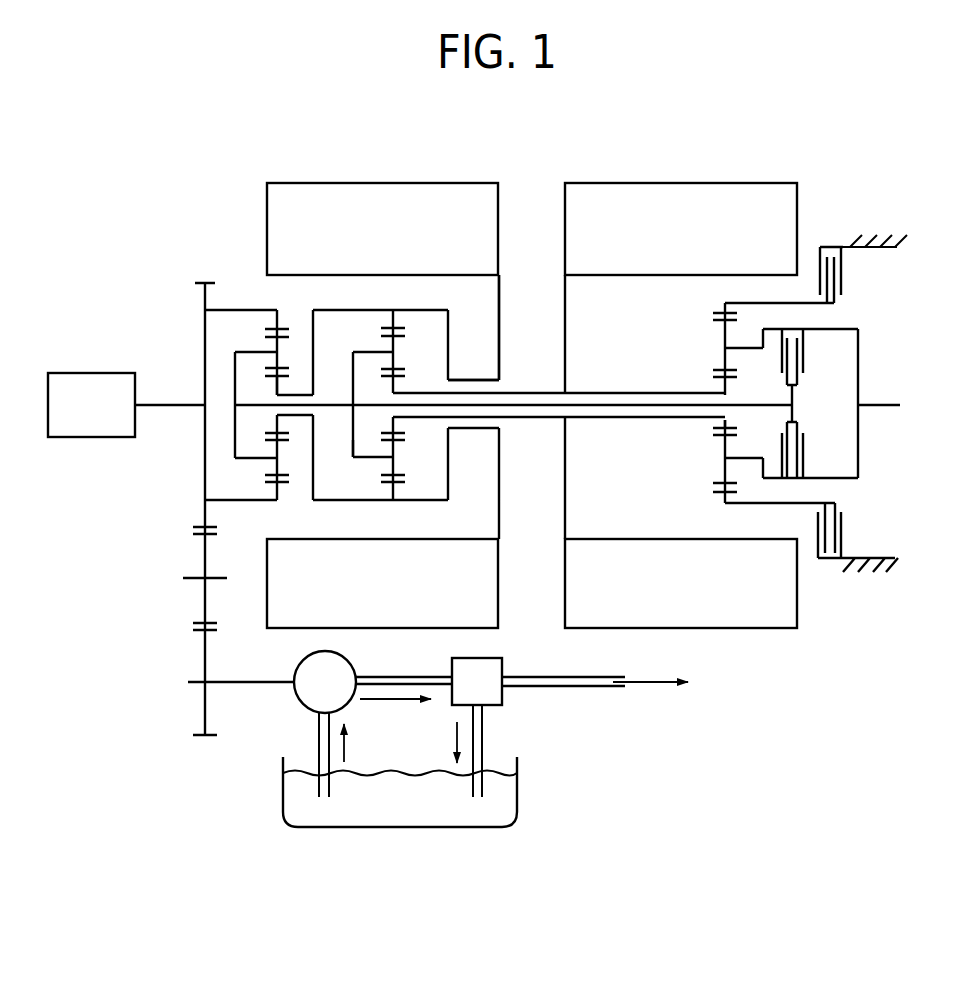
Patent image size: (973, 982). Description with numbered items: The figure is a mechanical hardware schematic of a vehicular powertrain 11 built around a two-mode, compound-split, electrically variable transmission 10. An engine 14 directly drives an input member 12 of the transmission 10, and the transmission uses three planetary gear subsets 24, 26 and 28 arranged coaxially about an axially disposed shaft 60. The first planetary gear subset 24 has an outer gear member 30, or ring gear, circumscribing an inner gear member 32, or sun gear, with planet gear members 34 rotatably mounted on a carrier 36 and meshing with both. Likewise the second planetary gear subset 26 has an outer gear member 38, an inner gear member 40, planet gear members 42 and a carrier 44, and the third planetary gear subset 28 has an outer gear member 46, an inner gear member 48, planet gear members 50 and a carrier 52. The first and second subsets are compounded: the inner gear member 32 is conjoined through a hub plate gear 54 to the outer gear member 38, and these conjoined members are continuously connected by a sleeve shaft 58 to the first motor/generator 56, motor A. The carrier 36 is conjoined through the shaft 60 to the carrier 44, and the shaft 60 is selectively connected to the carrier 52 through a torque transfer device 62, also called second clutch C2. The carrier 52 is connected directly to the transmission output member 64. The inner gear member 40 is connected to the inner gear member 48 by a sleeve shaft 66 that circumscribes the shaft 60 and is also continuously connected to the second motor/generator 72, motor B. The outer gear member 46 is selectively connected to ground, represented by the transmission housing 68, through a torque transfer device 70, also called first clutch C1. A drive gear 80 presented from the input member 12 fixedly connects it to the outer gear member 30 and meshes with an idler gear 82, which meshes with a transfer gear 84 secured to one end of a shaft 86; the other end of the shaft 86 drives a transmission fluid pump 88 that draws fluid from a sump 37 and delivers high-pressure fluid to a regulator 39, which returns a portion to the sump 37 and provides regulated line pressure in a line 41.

The electrically variable transmission 10 is at (529, 170).
The vehicular powertrain 11 is at (148, 288).
The input member 12 is at (172, 405).
The engine 14 is at (80, 419).
The first planetary gear subset 24 is at (243, 300).
The second planetary gear subset 26 is at (412, 330).
The third planetary gear subset 28 is at (688, 334).
The outer gear member 30 is at (278, 325).
The inner gear member 32 is at (279, 379).
The planet gear members 34 is at (270, 343).
The carrier 36 is at (240, 434).
The outer gear member 38 is at (386, 330).
The inner gear member 40 is at (386, 432).
The planet gear members 42 is at (400, 366).
The carrier 44 is at (353, 445).
The outer gear member 46 is at (722, 312).
The inner gear member 48 is at (728, 432).
The planet gear members 50 is at (725, 352).
The carrier 52 is at (840, 329).
The hub plate gear 54 is at (313, 340).
The first motor/generator 56 is at (372, 244).
The sleeve shaft 58 is at (478, 378).
The shaft 60 is at (528, 405).
The torque transfer device 62 is at (803, 350).
The transmission output member 64 is at (880, 402).
The sleeve shaft 66 is at (583, 393).
The transmission housing 68 is at (880, 240).
The torque transfer device 70 is at (842, 268).
The second motor/generator 72 is at (667, 244).
The drive gear 80 is at (203, 500).
The idler gear 82 is at (205, 598).
The transfer gear 84 is at (205, 655).
The shaft 86 is at (240, 683).
The transmission fluid pump 88 is at (337, 672).
The regulator 39 is at (502, 700).
The line 41 is at (620, 688).
The sump 37 is at (517, 795).
The first clutch C1 is at (852, 539).
The second clutch C2 is at (816, 462).